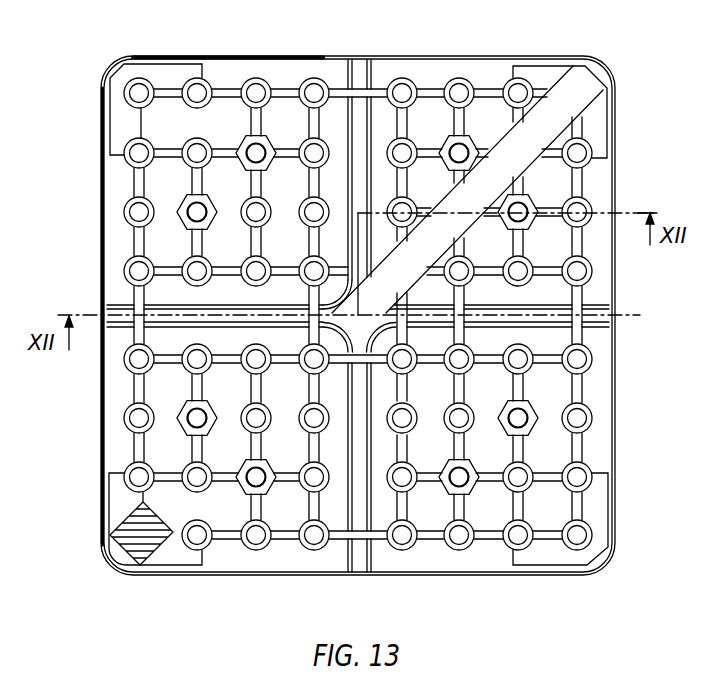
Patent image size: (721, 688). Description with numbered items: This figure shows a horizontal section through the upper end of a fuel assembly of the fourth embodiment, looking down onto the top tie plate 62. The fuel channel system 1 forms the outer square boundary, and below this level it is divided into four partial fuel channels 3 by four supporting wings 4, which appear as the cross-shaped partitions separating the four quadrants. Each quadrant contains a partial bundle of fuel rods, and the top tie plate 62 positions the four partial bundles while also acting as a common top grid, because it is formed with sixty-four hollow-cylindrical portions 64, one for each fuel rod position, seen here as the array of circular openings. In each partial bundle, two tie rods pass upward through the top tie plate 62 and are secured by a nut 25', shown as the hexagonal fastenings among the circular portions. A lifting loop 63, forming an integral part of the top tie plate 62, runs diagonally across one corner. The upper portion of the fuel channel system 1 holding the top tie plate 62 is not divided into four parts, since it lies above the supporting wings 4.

The fuel channel system 1 is at (100, 445).
The partial fuel channel 3 is at (437, 75).
The supporting wing 4 is at (358, 78).
The nut 25' is at (293, 319).
The top tie plate 62 is at (577, 333).
The lifting loop 63 is at (583, 97).
The hollow-cylindrical portion 64 is at (592, 418).